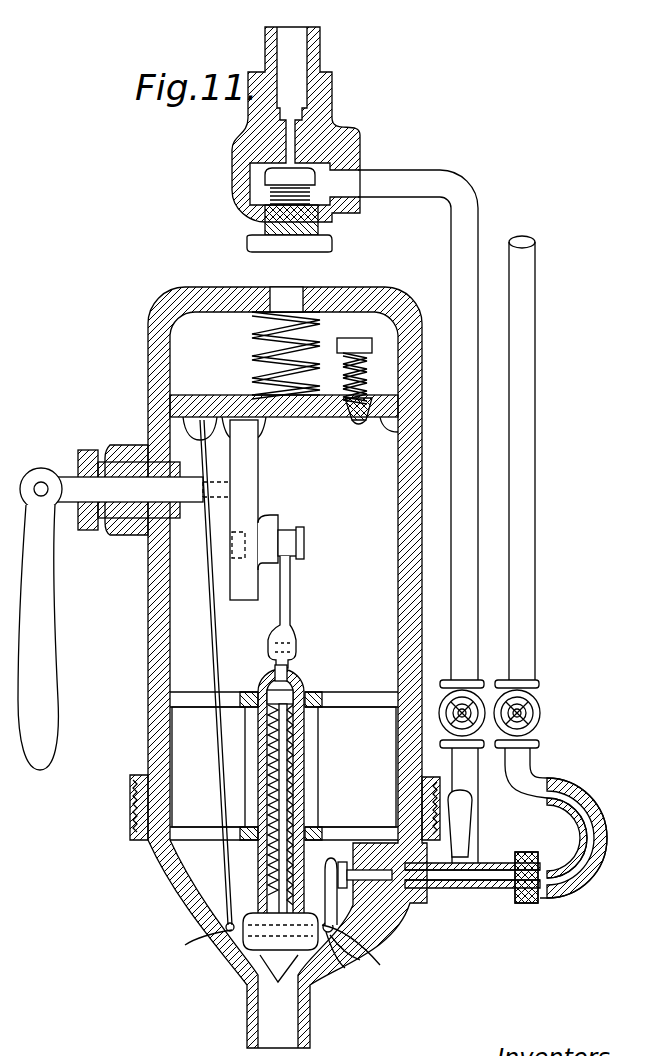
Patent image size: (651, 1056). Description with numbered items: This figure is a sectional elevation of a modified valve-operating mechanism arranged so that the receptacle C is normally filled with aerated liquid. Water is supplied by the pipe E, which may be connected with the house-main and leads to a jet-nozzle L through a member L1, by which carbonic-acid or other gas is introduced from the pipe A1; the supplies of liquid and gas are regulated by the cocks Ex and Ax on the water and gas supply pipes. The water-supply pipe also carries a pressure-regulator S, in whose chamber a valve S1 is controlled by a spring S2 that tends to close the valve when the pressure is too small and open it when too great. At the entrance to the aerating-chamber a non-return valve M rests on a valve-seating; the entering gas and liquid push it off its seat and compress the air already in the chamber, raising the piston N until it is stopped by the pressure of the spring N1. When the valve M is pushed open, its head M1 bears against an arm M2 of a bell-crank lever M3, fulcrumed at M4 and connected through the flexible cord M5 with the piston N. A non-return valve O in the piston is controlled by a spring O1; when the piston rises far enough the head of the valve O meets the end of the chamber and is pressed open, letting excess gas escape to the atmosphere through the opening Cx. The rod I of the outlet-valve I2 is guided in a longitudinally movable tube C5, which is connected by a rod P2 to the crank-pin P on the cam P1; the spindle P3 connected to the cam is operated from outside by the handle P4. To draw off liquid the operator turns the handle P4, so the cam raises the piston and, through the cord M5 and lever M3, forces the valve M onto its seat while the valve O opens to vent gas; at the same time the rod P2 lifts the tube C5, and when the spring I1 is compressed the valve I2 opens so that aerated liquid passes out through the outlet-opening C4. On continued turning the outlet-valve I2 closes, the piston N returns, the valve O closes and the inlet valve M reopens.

The pressure-regulator S is at (330, 140).
The valve S1 is at (262, 178).
The spring S2 is at (268, 212).
The water-pipe E is at (465, 238).
The opening Cx is at (286, 300).
The receptacle C is at (287, 650).
The gas pipe A1 is at (522, 322).
The spring N1 is at (253, 355).
The spring O1 is at (370, 375).
The non-return valve O is at (358, 425).
The spindle P3 is at (122, 490).
The piston N is at (315, 420).
The crank-pin P is at (300, 545).
The cam P1 is at (246, 578).
The rod P2 is at (290, 600).
The handle P4 is at (38, 685).
The cock Ex is at (440, 700).
The cock Ax is at (540, 715).
The flexible cord M5 is at (235, 730).
The tube C5 is at (302, 752).
The spring I1 is at (268, 795).
The rod I is at (287, 815).
The head M1 is at (336, 860).
The member L1 is at (470, 810).
The jet-nozzle L is at (488, 890).
The bell-crank lever M3 is at (198, 946).
The outlet-valve I2 is at (275, 945).
The non-return valve M is at (341, 941).
The fulcrum M4 is at (341, 961).
The arm M2 is at (360, 957).
The outlet-opening C4 is at (277, 1032).